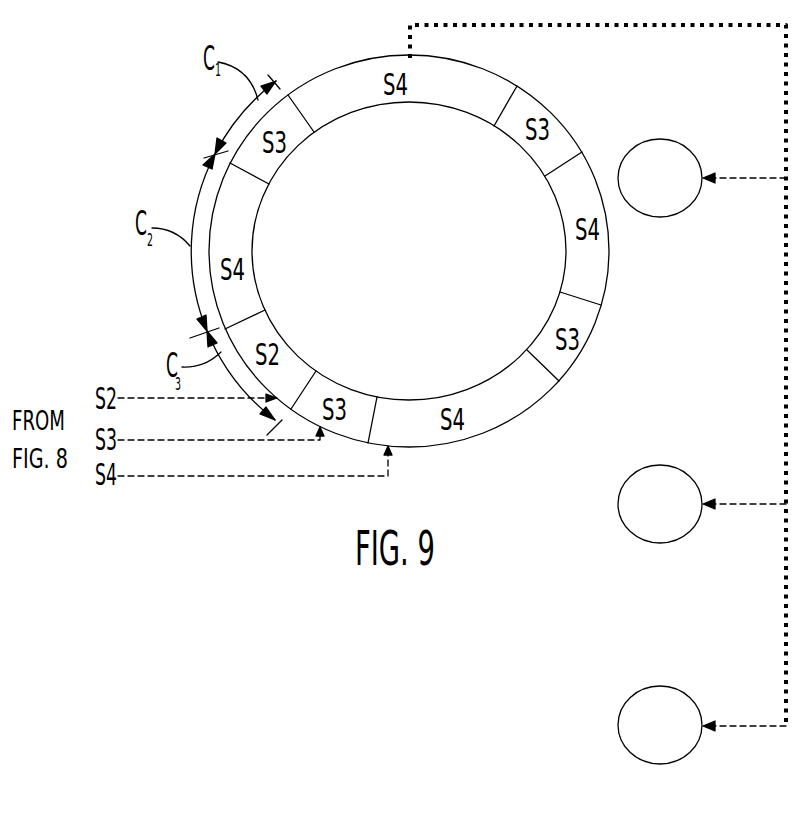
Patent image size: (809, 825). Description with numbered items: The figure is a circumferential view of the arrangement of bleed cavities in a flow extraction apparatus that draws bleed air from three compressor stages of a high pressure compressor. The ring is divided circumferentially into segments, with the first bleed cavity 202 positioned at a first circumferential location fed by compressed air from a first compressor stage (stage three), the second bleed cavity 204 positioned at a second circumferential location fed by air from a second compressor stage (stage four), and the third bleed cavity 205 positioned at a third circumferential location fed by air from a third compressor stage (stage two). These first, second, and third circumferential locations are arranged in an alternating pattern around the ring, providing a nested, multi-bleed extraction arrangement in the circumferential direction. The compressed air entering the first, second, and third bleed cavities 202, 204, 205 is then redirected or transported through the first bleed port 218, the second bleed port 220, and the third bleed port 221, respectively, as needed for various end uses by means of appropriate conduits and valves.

The first bleed cavity 202 is at (304, 146).
The second bleed cavity 204 is at (259, 222).
The third bleed cavity 205 is at (291, 343).
The first bleed port 218 is at (668, 216).
The second bleed port 220 is at (668, 542).
The third bleed port 221 is at (668, 763).